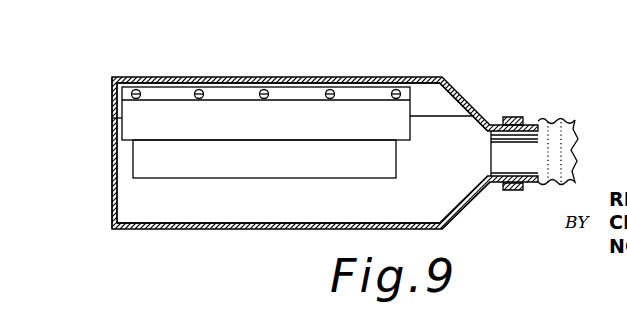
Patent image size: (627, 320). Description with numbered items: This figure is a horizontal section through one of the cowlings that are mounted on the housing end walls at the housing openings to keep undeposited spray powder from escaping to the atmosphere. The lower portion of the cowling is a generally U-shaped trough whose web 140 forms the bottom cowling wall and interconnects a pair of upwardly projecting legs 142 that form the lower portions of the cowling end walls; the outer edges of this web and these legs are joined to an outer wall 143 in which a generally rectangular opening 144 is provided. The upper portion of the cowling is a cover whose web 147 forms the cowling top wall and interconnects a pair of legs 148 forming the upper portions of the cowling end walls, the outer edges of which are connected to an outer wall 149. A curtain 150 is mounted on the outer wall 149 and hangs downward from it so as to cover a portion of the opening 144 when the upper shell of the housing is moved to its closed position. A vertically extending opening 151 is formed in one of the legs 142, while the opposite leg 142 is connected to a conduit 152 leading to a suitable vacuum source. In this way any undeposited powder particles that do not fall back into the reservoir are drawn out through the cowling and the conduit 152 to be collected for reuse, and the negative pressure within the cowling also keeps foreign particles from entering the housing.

The web 140 is at (232, 231).
The legs 142 is at (113, 222).
The outer wall 143 is at (343, 214).
The opening 144 is at (294, 174).
The web 147 is at (312, 47).
The legs 148 is at (112, 90).
The outer wall 149 is at (427, 92).
The curtain 150 is at (213, 148).
The opening 151 is at (112, 168).
The conduit 152 is at (562, 117).